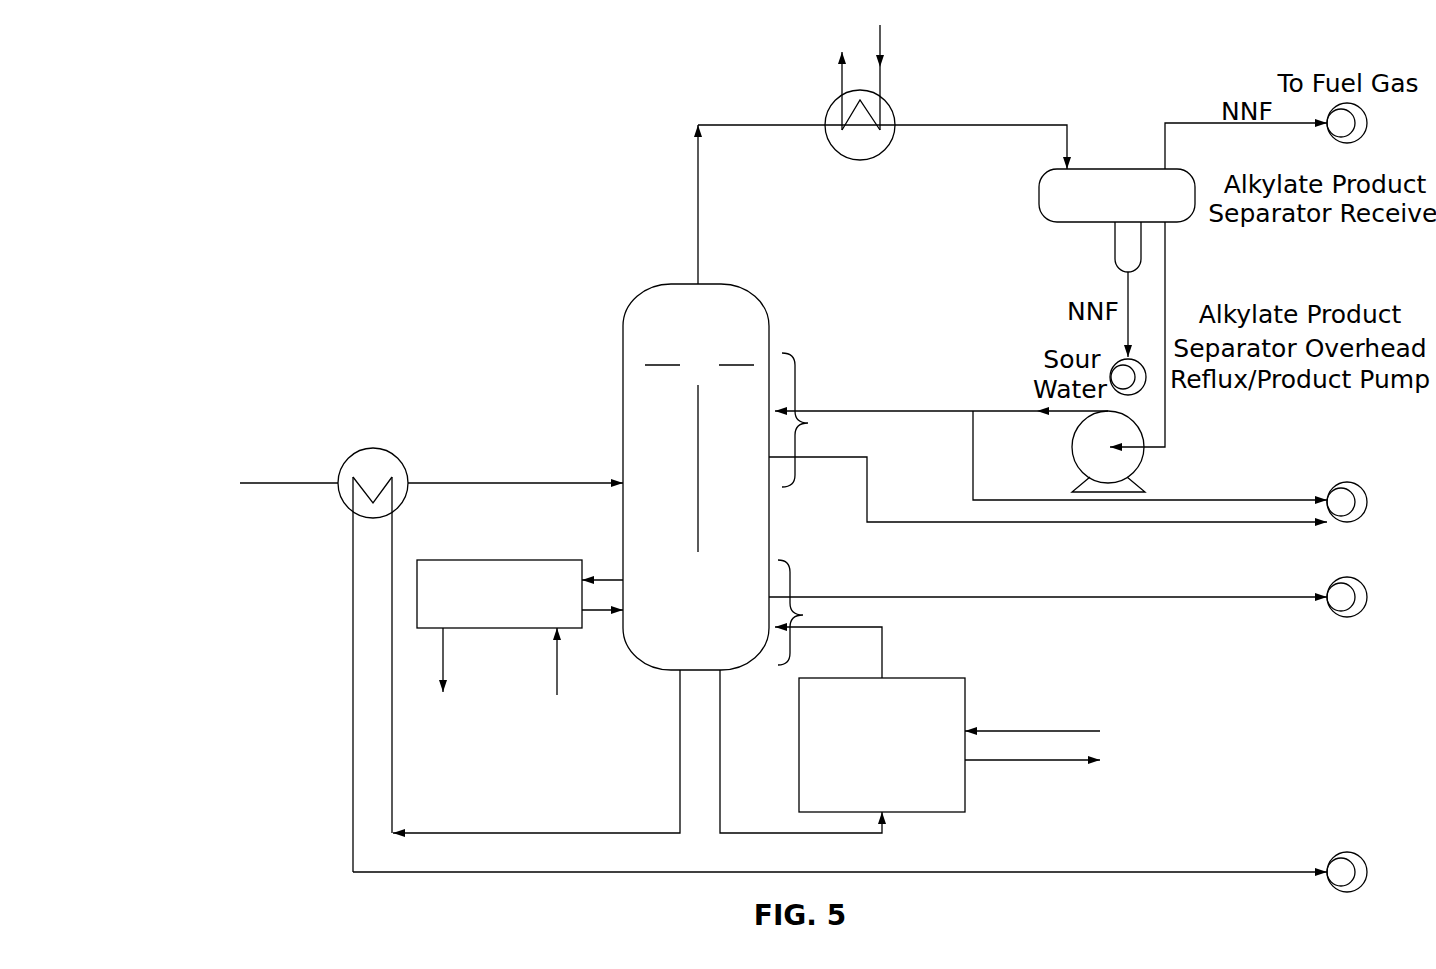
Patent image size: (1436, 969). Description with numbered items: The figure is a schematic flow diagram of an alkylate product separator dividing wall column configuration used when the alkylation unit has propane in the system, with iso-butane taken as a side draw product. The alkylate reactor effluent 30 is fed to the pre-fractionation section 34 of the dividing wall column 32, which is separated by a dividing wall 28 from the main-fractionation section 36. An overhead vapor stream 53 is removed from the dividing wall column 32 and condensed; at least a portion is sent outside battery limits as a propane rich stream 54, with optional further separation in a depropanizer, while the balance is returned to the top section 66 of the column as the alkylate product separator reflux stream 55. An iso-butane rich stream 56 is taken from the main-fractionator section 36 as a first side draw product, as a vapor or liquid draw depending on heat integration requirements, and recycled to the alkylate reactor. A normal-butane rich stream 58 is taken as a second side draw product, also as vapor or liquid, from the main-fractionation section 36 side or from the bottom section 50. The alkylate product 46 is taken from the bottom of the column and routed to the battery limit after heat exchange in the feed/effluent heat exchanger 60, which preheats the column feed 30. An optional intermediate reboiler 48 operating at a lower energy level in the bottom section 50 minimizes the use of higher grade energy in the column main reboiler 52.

The dividing wall 28 is at (695, 550).
The alkylate reactor effluent 30 is at (293, 483).
The dividing wall column 32 is at (745, 291).
The pre-fractionator section 34 is at (658, 447).
The main-fractionation section 36 is at (734, 452).
The alkylate product 46 is at (575, 833).
The intermediate reboiler 48 is at (565, 560).
The bottom section 50 is at (803, 615).
The main reboiler 52 is at (915, 678).
The overhead vapor stream 53 is at (698, 190).
The propane rich stream 54 is at (973, 485).
The alkylate product separator reflux stream 55 is at (935, 411).
The iso-butane rich stream 56 is at (935, 522).
The normal-butane rich stream 58 is at (935, 597).
The feed/effluent heat exchanger 60 is at (355, 455).
The top section 66 is at (808, 423).